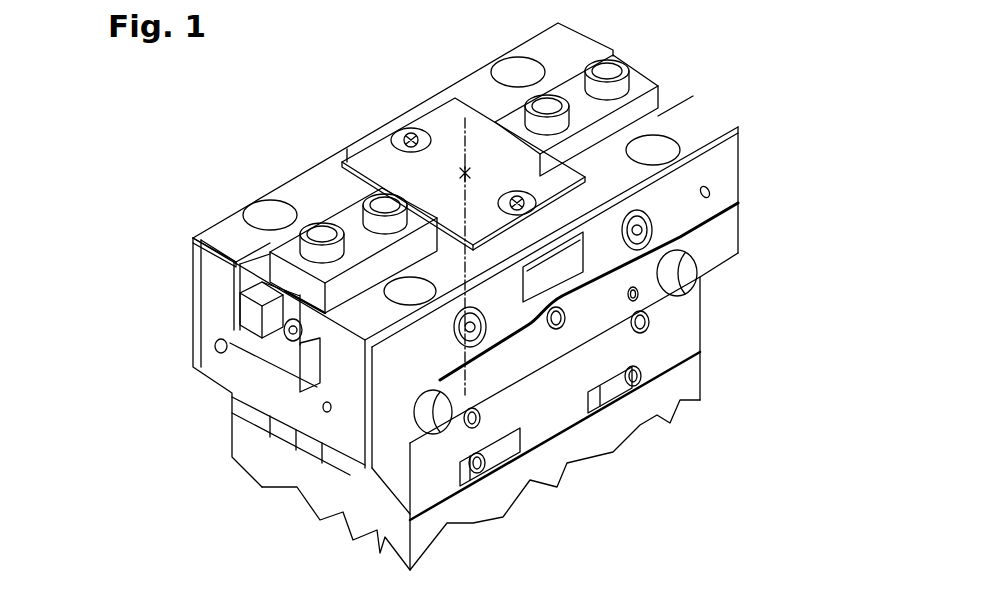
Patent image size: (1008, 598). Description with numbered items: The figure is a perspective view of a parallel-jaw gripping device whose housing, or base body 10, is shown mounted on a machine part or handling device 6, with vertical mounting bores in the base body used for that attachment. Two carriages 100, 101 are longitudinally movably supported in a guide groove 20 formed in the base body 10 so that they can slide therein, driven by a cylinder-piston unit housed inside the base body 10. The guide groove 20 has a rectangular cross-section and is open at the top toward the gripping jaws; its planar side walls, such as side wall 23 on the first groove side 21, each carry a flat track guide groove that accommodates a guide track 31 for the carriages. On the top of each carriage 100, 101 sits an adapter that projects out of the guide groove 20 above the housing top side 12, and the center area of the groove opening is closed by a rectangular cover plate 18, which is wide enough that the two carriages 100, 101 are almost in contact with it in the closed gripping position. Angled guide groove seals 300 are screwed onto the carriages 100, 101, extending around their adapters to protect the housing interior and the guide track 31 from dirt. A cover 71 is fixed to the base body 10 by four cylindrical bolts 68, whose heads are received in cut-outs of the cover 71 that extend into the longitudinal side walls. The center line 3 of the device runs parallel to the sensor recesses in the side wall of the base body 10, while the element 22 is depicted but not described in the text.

The base body 10 is at (232, 202).
The housing top side 12 is at (320, 183).
The carriage 100 is at (191, 237).
The first groove side 21 is at (240, 272).
The planar side wall 23 is at (233, 275).
The guide groove seal 300 is at (287, 298).
The guide track 31 is at (248, 315).
The guide groove 20 is at (220, 356).
The clamping wedge 22 is at (315, 385).
The carriage 101 is at (670, 88).
The center line 3 is at (467, 155).
The cover plate 18 is at (563, 183).
The machine part or handling device 6 is at (688, 383).
The cylindrical bolt 68 is at (607, 397).
The cover 71 is at (558, 420).